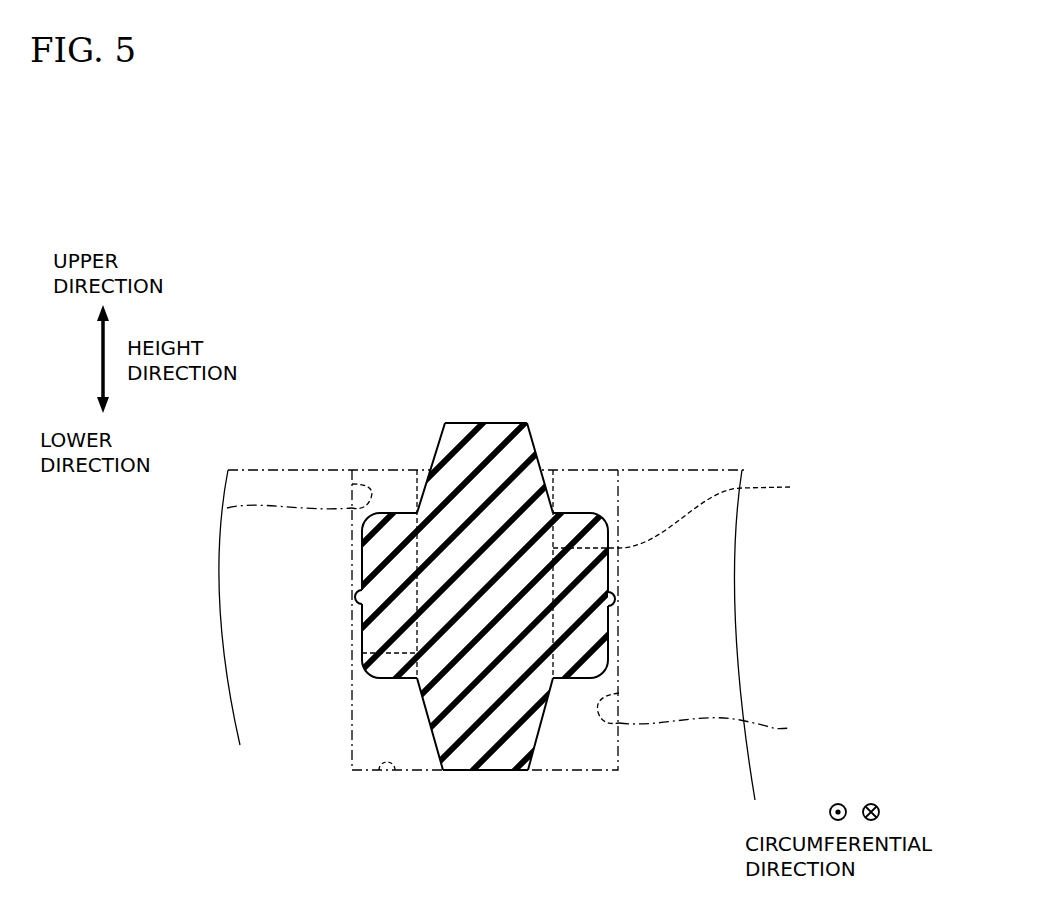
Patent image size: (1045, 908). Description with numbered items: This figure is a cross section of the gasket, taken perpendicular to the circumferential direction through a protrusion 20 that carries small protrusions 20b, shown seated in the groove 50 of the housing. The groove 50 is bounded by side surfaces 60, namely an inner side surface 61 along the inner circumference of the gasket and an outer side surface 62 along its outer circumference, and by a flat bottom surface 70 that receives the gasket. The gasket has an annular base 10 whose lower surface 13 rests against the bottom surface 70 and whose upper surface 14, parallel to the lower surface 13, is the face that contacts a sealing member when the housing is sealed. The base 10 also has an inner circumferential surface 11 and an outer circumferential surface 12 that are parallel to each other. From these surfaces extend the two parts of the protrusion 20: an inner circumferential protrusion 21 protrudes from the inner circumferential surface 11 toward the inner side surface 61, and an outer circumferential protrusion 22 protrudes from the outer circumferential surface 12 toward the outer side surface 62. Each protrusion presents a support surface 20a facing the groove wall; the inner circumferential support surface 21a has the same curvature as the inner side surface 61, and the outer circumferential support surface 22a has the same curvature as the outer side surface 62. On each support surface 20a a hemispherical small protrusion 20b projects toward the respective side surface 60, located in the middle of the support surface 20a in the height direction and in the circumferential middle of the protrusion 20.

The base 10 is at (482, 438).
The upper surface 14 is at (462, 422).
The lower surface 13 is at (488, 771).
The inner circumferential surface 11 is at (720, 512).
The outer circumferential surface 12 is at (362, 655).
The protrusion 20 is at (486, 595).
The inner circumferential protrusion 21 is at (587, 642).
The outer circumferential protrusion 22 is at (383, 541).
The support surface 20a is at (486, 574).
The inner circumferential support surface 21a is at (607, 563).
The outer circumferential support surface 22a is at (365, 636).
The small protrusion 20b is at (356, 597).
The groove 50 is at (584, 494).
The side surface 60 is at (486, 612).
The inner side surface 61 is at (728, 716).
The outer side surface 62 is at (227, 508).
The bottom surface 70 is at (395, 772).